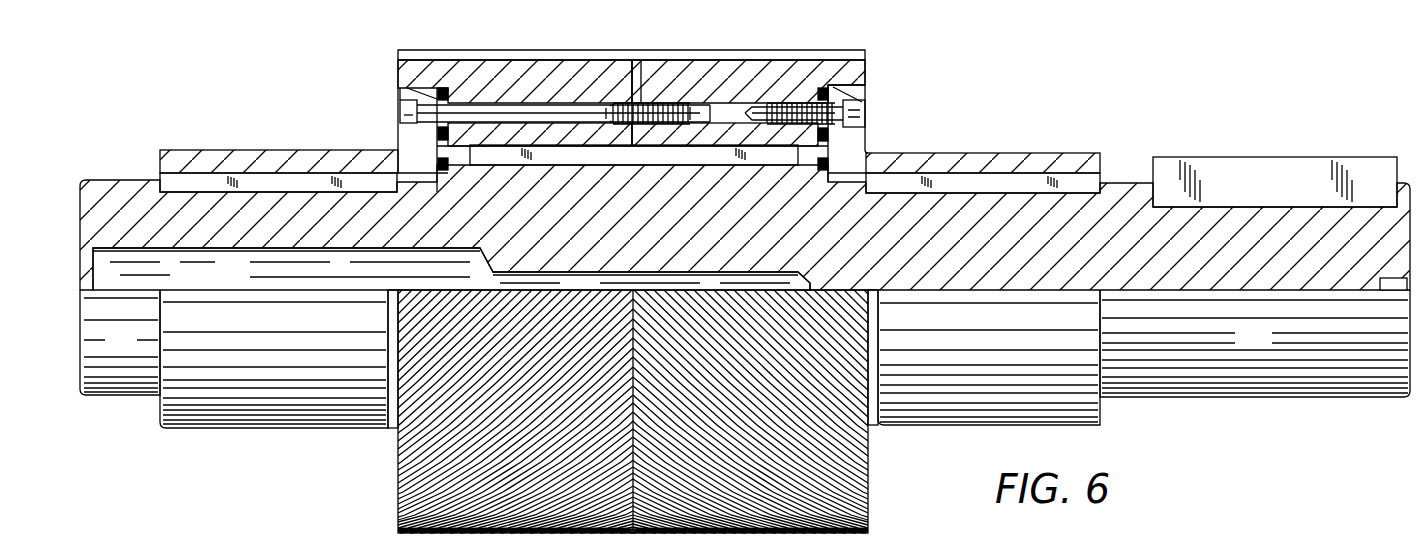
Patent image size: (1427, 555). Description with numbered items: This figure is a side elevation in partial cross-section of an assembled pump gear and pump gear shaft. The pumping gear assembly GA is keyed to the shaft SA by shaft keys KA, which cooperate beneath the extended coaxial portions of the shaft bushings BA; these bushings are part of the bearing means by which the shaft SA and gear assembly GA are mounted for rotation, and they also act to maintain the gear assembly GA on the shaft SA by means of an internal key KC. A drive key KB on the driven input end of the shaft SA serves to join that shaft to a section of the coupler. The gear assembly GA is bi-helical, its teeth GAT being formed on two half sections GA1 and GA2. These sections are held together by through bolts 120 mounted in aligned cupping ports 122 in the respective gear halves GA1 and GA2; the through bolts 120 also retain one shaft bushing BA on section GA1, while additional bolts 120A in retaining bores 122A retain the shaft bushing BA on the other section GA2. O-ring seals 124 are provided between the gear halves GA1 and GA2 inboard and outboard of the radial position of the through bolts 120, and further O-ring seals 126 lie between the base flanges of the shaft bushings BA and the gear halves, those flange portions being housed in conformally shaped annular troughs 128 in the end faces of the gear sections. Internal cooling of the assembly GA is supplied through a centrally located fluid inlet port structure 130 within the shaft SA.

The through bolt 120 is at (520, 112).
The additional bolt 120A is at (797, 108).
The cupping port 122 is at (636, 104).
The retaining bore 122A is at (795, 100).
The O-ring seal 124 is at (612, 112).
The O-ring seal 126 is at (446, 88).
The annular trough 128 is at (418, 90).
The fluid inlet port structure 130 is at (235, 282).
The pumping gear assembly GA is at (735, 48).
The gear half section GA1 is at (572, 92).
The gear half section GA2 is at (720, 94).
The gear teeth GAT is at (554, 46).
The shaft key KA is at (245, 178).
The shaft bushing BA is at (283, 162).
The drive key KB is at (1252, 172).
The internal key KC is at (707, 152).
The shaft SA is at (135, 352).